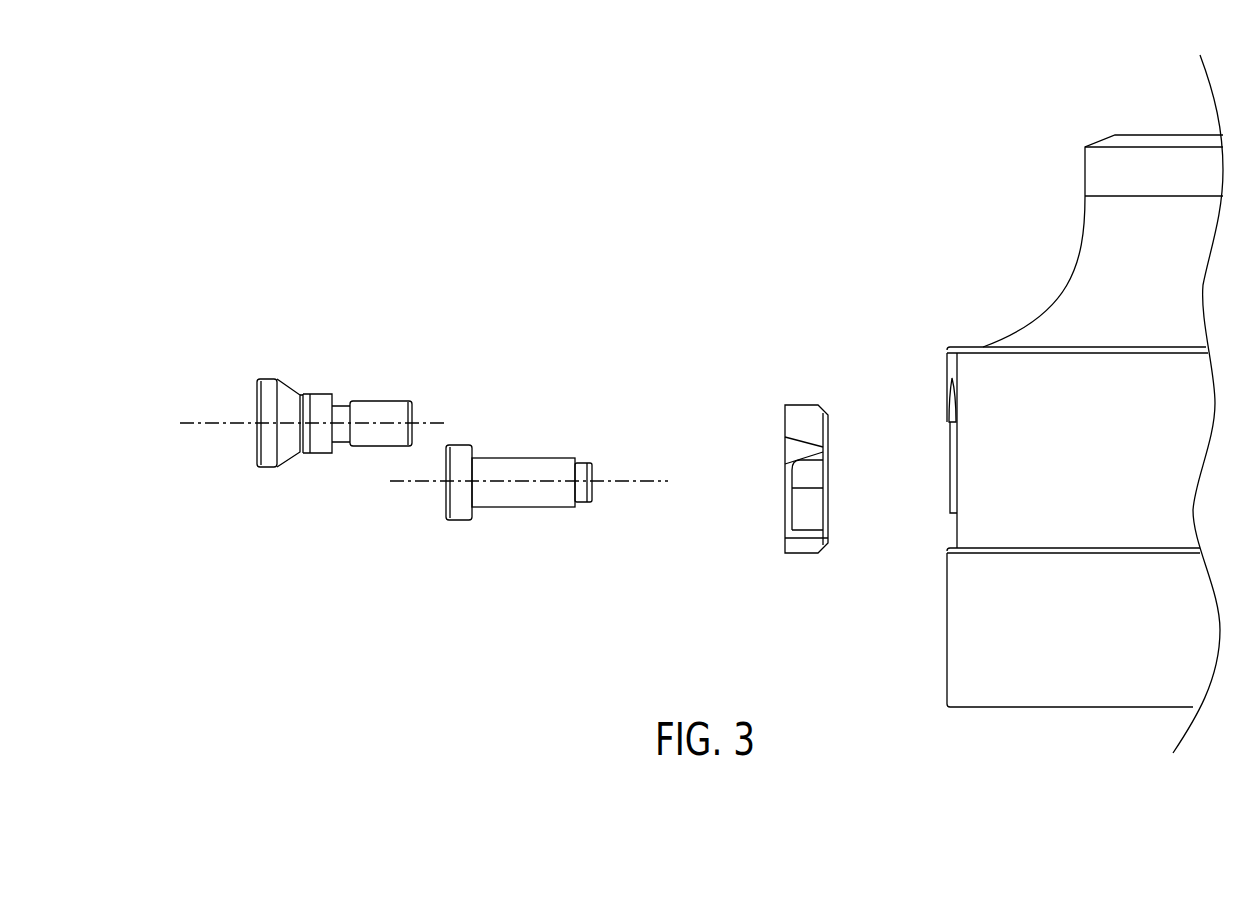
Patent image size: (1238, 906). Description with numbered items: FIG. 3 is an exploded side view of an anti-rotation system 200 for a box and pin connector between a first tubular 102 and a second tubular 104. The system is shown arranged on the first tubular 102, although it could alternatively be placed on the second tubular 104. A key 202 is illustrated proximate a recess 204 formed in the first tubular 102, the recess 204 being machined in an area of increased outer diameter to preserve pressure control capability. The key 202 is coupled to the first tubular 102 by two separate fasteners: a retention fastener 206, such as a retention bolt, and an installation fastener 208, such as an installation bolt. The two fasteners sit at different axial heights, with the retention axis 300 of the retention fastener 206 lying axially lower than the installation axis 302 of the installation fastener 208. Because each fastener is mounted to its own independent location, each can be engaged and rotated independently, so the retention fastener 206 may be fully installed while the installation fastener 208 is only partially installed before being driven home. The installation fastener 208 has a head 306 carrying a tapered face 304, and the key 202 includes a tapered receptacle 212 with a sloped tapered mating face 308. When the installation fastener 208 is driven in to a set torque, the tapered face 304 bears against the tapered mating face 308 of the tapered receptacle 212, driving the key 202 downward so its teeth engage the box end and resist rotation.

The first tubular 102 is at (1160, 158).
The second tubular 104 is at (1124, 700).
The anti-rotation system 200 is at (978, 140).
The key 202 is at (809, 444).
The recess 204 is at (927, 391).
The retention fastener 206 is at (523, 467).
The installation fastener 208 is at (367, 406).
The tapered receptacle 212 is at (798, 462).
The retention axis 300 is at (630, 484).
The installation axis 302 is at (295, 400).
The tapered face 304 is at (288, 392).
The head 306 is at (268, 393).
The tapered mating face 308 is at (810, 447).